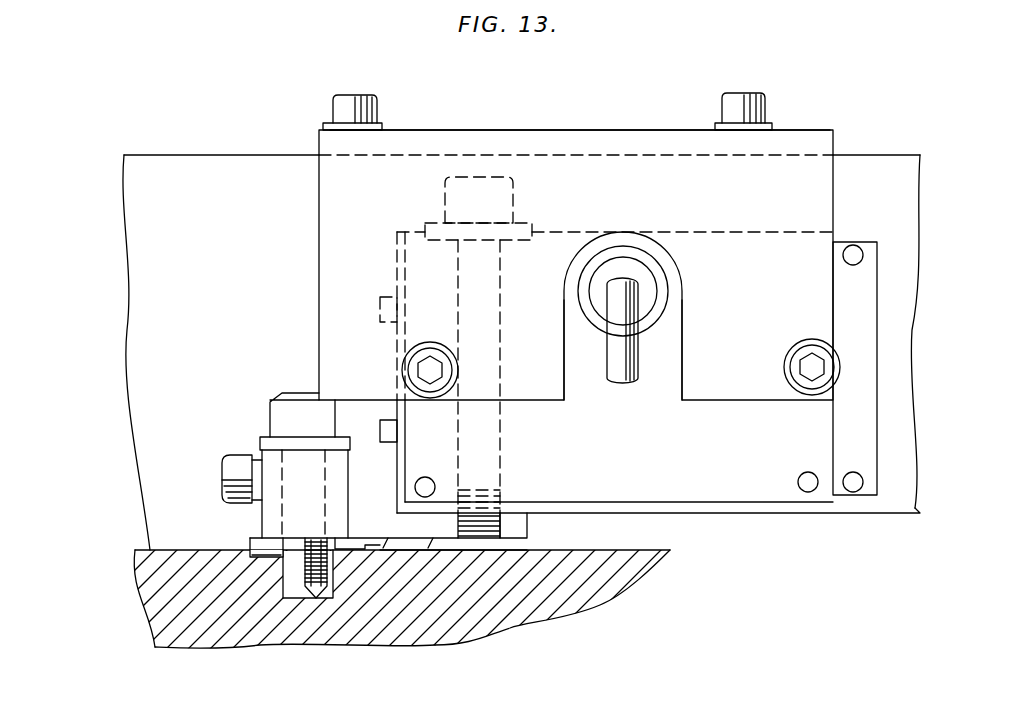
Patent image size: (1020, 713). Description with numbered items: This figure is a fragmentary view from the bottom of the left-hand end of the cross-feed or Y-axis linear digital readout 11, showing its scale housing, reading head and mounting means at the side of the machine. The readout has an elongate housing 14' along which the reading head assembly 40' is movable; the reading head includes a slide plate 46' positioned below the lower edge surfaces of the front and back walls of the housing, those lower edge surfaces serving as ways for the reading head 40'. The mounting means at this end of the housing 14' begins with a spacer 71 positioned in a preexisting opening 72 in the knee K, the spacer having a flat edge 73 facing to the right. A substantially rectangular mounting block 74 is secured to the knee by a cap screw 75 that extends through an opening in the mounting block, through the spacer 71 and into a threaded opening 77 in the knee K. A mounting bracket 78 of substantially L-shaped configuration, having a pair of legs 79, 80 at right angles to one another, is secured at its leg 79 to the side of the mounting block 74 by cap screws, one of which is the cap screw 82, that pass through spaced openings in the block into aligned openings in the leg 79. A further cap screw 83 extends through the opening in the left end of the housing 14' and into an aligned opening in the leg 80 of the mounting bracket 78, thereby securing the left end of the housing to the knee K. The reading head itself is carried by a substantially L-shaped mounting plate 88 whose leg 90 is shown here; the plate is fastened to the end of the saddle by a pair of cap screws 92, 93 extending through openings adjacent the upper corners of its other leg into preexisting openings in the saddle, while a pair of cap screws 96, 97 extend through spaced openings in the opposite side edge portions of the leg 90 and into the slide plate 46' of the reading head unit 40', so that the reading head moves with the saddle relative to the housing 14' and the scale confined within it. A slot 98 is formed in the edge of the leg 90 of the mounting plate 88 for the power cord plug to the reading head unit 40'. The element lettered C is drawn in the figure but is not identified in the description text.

The cross-feed or Y-axis linear digital readout 11 is at (666, 101).
The elongate housing 14' is at (521, 330).
The reading head assembly 40' is at (619, 523).
The slide plate 46' is at (875, 368).
The spacer 71 is at (262, 558).
The preexisting opening 72 is at (247, 550).
The flat edge 73 is at (345, 545).
The mounting block 74 is at (258, 518).
The cap screw 75 is at (270, 418).
The threaded opening 77 is at (300, 588).
The mounting bracket 78 is at (382, 549).
The leg 79 is at (388, 466).
The leg 80 is at (430, 542).
The cap screw 82 is at (243, 455).
The cap screw 83 is at (513, 214).
The mounting plate 88 is at (545, 130).
The leg 90 is at (318, 237).
The cap screw 92 is at (332, 110).
The cap screw 93 is at (764, 110).
The cap screw 96 is at (445, 370).
The cap screw 97 is at (822, 368).
The slot 98 is at (565, 360).
The pin C is at (640, 352).
The knee K is at (625, 549).